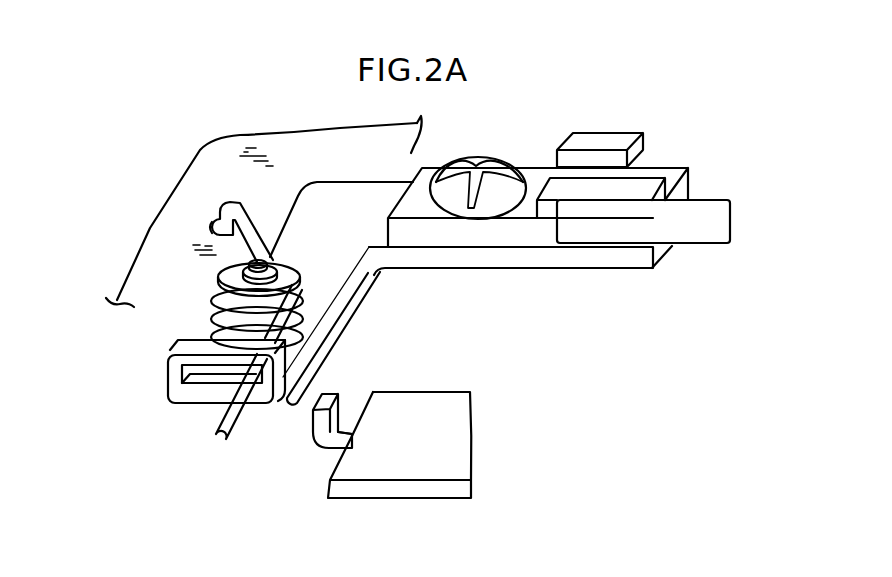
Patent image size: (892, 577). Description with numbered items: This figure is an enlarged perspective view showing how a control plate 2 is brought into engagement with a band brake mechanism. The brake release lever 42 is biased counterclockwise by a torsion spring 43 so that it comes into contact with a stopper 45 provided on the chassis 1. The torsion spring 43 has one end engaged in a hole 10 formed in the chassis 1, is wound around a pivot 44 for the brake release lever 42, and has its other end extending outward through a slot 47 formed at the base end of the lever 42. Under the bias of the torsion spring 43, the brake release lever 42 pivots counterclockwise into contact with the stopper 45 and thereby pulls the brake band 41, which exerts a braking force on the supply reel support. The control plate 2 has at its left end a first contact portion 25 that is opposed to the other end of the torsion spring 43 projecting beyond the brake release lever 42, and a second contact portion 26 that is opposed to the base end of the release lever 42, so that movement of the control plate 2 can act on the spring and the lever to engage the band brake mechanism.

The chassis 1 is at (212, 137).
The hole 10 is at (212, 227).
The control plate 2 is at (438, 423).
The first contact portion 25 is at (320, 415).
The second contact portion 26 is at (360, 413).
The brake band 41 is at (696, 227).
The brake release lever 42 is at (340, 250).
The torsion spring 43 is at (215, 413).
The pivot 44 is at (247, 272).
The stopper 45 is at (613, 150).
The slot 47 is at (217, 368).